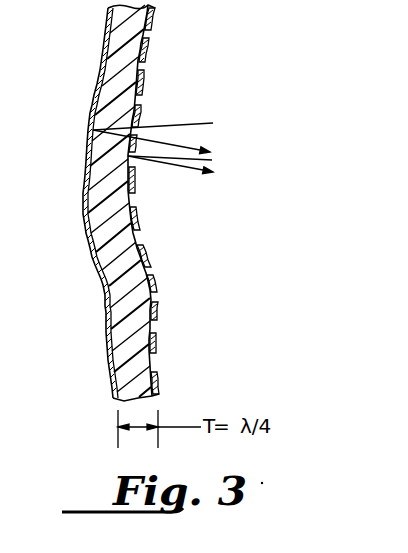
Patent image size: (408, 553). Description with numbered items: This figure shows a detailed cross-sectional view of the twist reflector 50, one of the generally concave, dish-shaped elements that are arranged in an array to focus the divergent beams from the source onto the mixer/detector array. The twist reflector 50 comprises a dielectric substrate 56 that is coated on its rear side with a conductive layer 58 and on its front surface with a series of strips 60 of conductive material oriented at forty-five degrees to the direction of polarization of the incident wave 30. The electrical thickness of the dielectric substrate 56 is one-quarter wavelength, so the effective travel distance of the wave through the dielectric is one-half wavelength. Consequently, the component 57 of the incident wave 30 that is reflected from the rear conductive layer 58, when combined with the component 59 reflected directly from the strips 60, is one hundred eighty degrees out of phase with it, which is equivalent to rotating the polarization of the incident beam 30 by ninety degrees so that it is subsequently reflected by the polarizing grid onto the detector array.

The incident wave 30 is at (226, 120).
The twist reflector 50 is at (75, 244).
The dielectric substrate 56 is at (100, 178).
The component of the incident wave 57 is at (192, 123).
The conductive layer 58 is at (97, 103).
The component directly reflected from the strips 59 is at (176, 167).
The strips of conductive material 60 is at (150, 78).